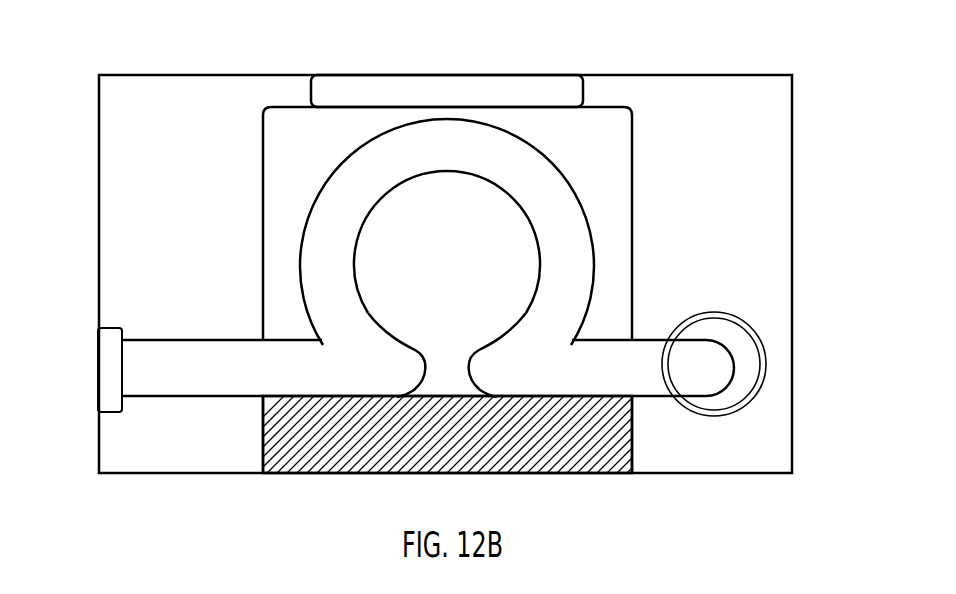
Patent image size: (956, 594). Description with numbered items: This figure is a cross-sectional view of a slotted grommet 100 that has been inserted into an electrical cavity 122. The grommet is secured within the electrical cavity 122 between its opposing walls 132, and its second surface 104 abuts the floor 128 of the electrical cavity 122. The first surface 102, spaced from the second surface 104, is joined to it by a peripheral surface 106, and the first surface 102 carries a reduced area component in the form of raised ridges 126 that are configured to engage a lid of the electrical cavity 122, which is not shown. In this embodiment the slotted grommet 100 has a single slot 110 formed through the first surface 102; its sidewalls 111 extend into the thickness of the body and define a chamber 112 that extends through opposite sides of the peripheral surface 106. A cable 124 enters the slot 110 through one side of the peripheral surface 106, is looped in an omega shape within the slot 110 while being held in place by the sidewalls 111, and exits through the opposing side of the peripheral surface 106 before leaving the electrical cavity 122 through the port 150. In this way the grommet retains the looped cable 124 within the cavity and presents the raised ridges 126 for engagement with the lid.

The slotted grommet 100 is at (626, 103).
The first surface 102 is at (288, 107).
The second surface 104 is at (287, 473).
The peripheral surface 106 is at (262, 208).
The slot 110 is at (249, 225).
The sidewalls 111 is at (610, 215).
The chamber 112 is at (613, 304).
The electrical cavity 122 is at (722, 122).
The cable 124 is at (708, 363).
The raised ridges 126 is at (432, 90).
The floor 128 is at (120, 473).
The opposing walls 132 is at (168, 118).
The port 150 is at (765, 370).